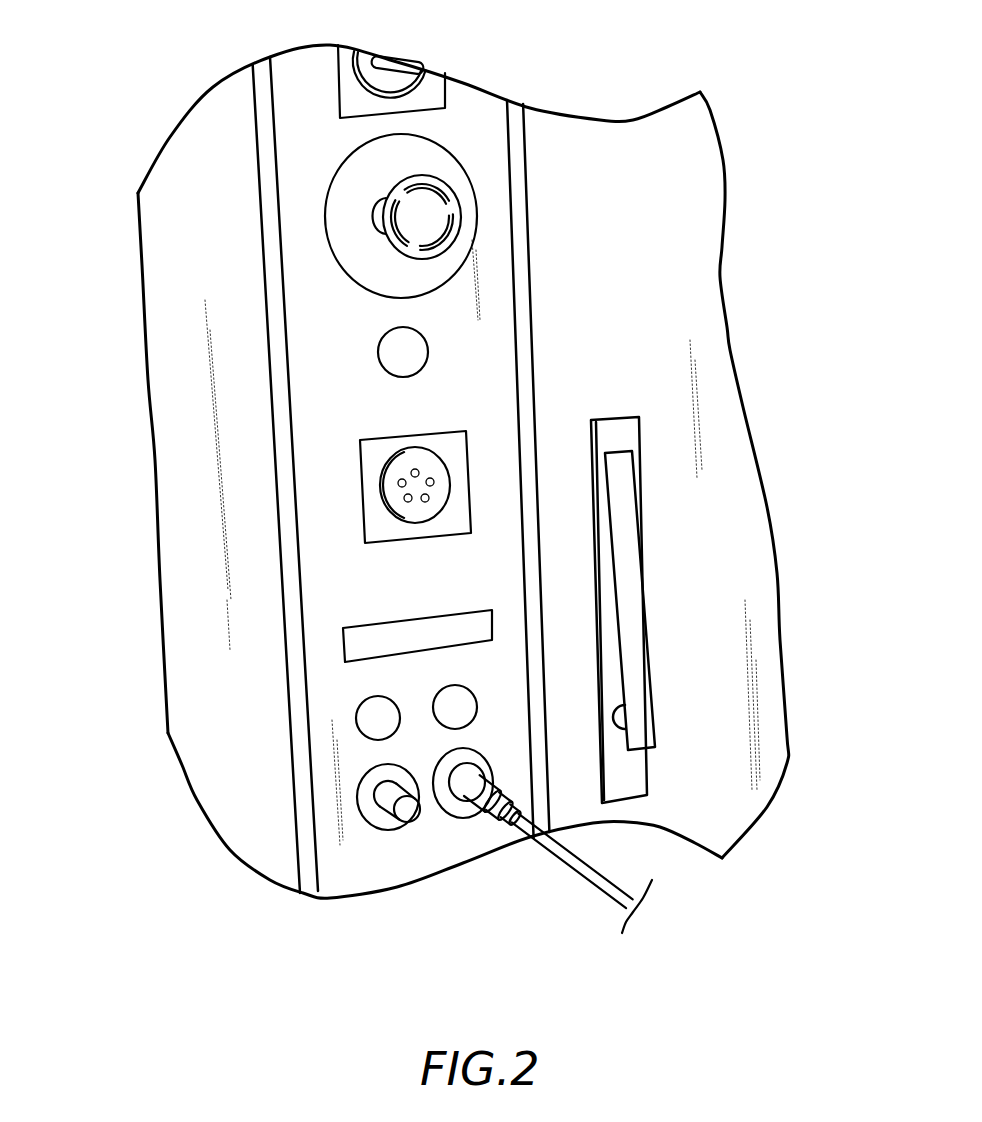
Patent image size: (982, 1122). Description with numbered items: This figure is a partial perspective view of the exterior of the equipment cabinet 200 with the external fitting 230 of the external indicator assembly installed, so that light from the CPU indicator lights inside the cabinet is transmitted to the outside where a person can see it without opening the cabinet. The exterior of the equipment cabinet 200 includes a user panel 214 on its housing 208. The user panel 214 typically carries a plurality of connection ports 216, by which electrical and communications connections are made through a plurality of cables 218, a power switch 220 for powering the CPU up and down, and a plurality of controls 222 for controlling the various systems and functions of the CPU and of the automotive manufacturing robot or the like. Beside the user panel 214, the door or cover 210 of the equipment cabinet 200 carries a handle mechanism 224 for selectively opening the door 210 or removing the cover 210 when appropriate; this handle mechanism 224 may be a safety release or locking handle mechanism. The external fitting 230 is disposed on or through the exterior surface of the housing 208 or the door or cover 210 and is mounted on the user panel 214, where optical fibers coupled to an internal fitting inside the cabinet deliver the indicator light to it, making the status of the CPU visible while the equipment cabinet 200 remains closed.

The equipment cabinet 200 is at (182, 510).
The housing 208 is at (213, 673).
The door or cover 210 is at (675, 450).
The user panel 214 is at (364, 213).
The connection ports 216 is at (452, 826).
The cables 218 is at (597, 880).
The power switch 220 is at (393, 355).
The controls 222 is at (438, 120).
The handle mechanism 224 is at (640, 605).
The external fitting 230 is at (397, 495).